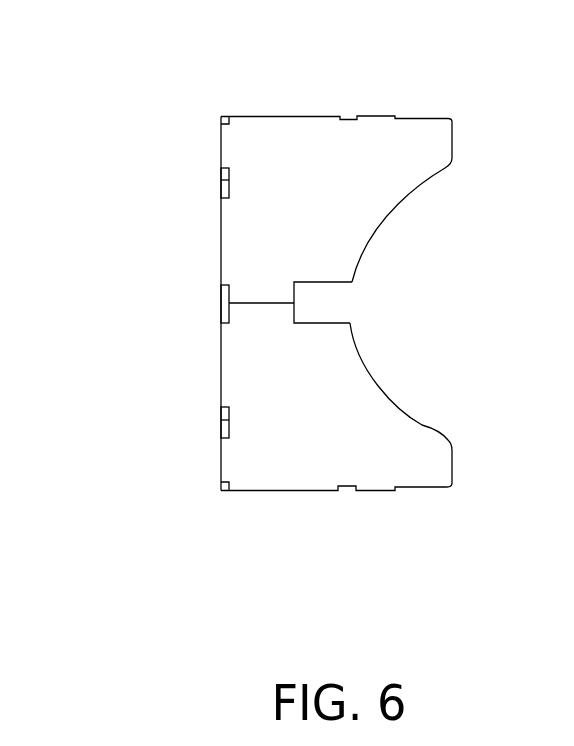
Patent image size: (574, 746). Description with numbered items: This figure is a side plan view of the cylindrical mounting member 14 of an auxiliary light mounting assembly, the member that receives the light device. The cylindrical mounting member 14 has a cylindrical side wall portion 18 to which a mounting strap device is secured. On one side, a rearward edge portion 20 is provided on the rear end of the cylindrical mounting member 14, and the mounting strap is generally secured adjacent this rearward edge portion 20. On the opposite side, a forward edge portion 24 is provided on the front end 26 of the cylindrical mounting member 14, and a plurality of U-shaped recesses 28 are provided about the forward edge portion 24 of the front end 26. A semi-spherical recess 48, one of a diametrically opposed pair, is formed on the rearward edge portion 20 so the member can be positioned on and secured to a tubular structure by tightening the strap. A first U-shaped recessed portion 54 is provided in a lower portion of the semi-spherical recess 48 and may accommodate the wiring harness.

The cylindrical mounting member 14 is at (213, 119).
The cylindrical side wall portion 18 is at (282, 135).
The rearward edge portion 20 is at (458, 138).
The front end 26 is at (176, 192).
The forward edge portion 24 is at (171, 392).
The U-shaped recess 28 is at (221, 420).
The first U-shaped recessed portion 54 is at (330, 322).
The semi-spherical recess 48 is at (423, 425).